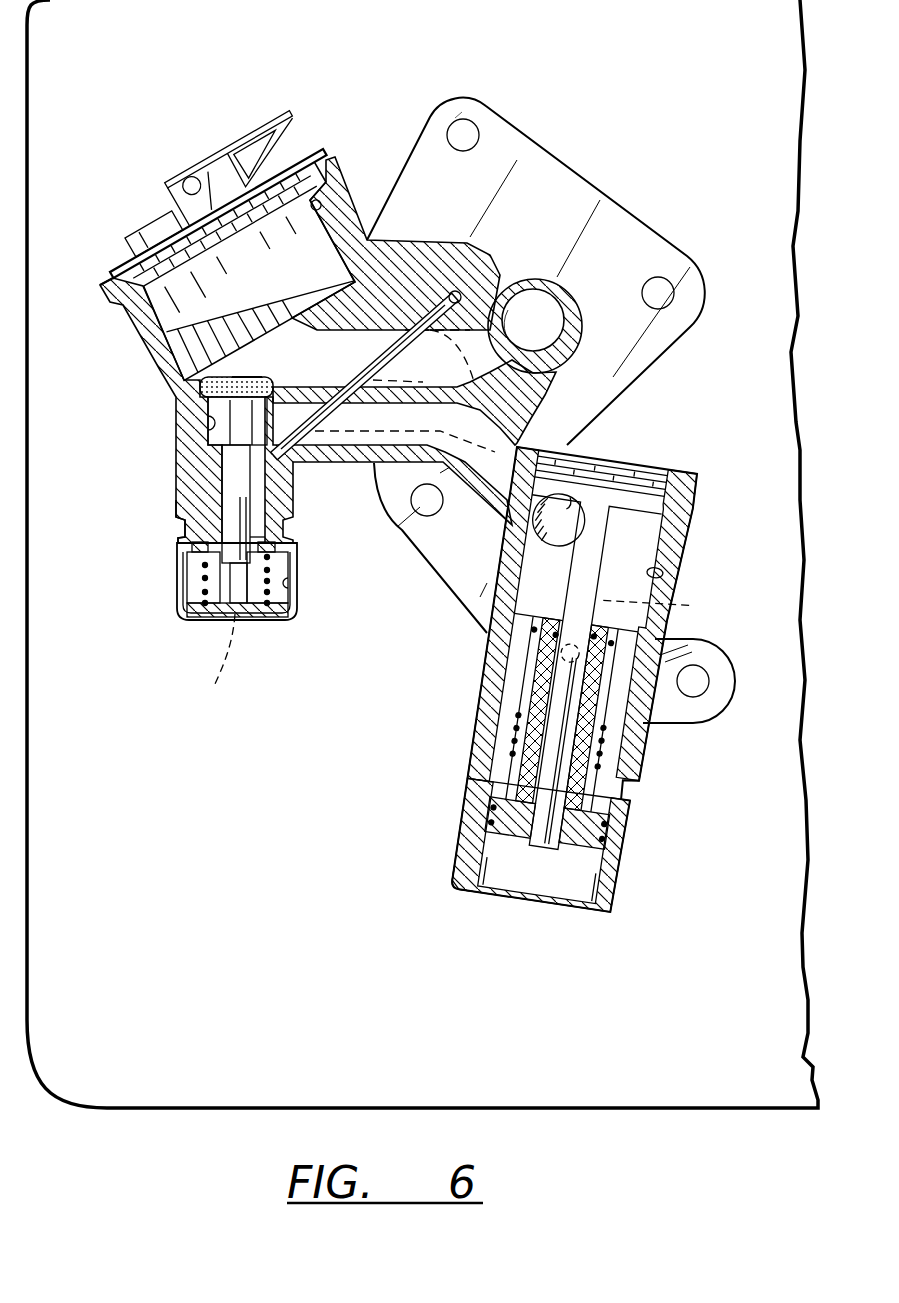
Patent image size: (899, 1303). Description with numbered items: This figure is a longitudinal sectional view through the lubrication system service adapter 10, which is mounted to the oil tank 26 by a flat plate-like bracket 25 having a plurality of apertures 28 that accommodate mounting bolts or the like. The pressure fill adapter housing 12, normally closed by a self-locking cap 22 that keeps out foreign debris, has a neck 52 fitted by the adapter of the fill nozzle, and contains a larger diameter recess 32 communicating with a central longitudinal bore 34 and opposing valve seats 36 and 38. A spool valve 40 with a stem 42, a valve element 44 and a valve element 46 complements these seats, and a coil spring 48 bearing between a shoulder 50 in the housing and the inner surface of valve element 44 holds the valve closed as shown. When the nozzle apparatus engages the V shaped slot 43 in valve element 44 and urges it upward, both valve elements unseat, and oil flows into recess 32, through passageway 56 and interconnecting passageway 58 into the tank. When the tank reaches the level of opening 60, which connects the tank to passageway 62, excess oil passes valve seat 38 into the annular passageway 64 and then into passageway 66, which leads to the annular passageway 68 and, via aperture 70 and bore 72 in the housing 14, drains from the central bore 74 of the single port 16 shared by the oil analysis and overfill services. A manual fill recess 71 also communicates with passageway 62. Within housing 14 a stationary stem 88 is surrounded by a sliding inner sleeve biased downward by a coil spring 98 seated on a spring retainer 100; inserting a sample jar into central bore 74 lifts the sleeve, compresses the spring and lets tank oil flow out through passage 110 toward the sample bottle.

The lubrication system service adapter 10 is at (114, 218).
The pressure fill adapter housing 12 is at (176, 492).
The housing 14 is at (640, 784).
The port 16 is at (589, 919).
The cap 22 is at (221, 143).
The bracket 25 is at (633, 216).
The oil tank 26 is at (600, 111).
The apertures 28 is at (470, 123).
The recess 32 is at (288, 594).
The central longitudinal bore 34 is at (276, 556).
The valve seat 36 is at (288, 618).
The valve seat 38 is at (275, 387).
The spool valve 40 is at (209, 633).
The stem 42 is at (244, 505).
The V shaped slot 43 is at (210, 657).
The valve element 44 is at (255, 619).
The valve element 46 is at (246, 378).
The coil spring 48 is at (205, 582).
The shoulder 50 is at (194, 549).
The neck 52 is at (176, 514).
The passageway 56 is at (395, 348).
The interconnecting passageway 58 is at (480, 290).
The opening 60 is at (558, 362).
The passageway 62 is at (428, 400).
The annular passageway 64 is at (207, 423).
The passageway 66 is at (441, 445).
The annular passageway 68 is at (512, 666).
The aperture 70 is at (582, 494).
The recess 71 is at (342, 203).
The bore 72 is at (664, 575).
The central bore 74 is at (472, 895).
The stem 88 is at (612, 541).
The coil spring 98 is at (622, 800).
The spring retainer 100 is at (602, 844).
The passage 110 is at (667, 607).